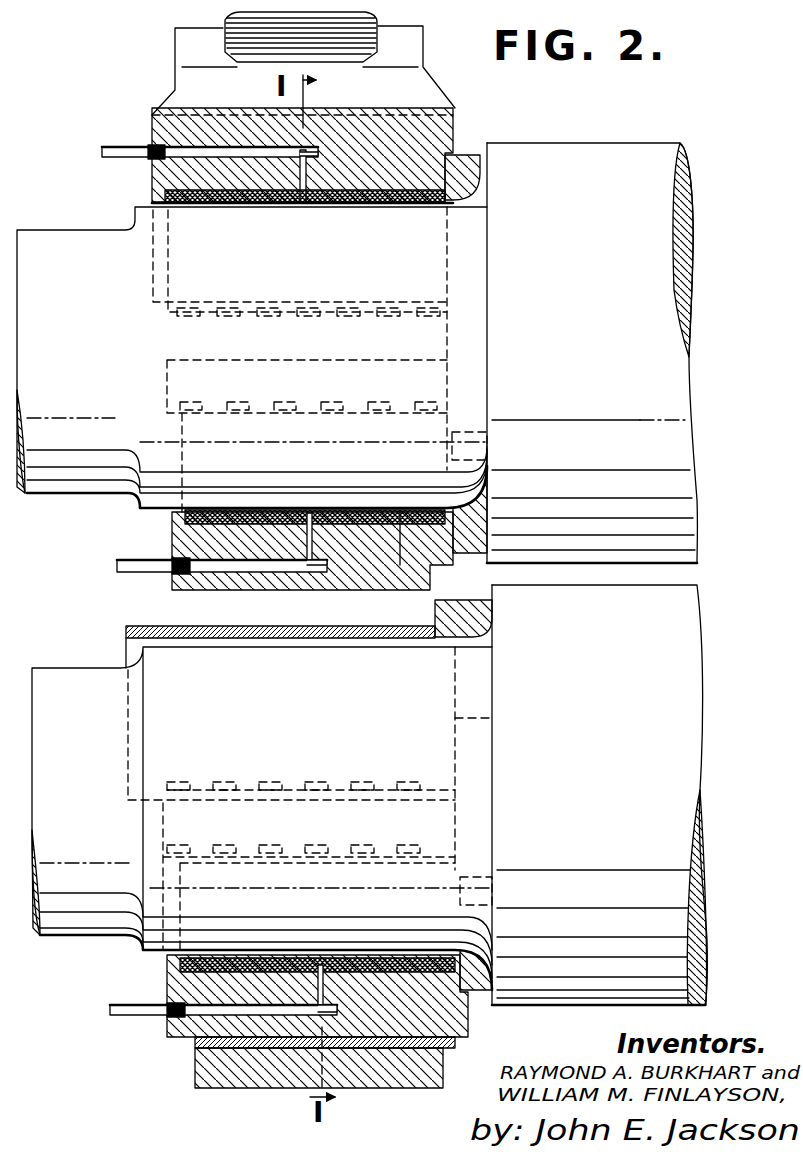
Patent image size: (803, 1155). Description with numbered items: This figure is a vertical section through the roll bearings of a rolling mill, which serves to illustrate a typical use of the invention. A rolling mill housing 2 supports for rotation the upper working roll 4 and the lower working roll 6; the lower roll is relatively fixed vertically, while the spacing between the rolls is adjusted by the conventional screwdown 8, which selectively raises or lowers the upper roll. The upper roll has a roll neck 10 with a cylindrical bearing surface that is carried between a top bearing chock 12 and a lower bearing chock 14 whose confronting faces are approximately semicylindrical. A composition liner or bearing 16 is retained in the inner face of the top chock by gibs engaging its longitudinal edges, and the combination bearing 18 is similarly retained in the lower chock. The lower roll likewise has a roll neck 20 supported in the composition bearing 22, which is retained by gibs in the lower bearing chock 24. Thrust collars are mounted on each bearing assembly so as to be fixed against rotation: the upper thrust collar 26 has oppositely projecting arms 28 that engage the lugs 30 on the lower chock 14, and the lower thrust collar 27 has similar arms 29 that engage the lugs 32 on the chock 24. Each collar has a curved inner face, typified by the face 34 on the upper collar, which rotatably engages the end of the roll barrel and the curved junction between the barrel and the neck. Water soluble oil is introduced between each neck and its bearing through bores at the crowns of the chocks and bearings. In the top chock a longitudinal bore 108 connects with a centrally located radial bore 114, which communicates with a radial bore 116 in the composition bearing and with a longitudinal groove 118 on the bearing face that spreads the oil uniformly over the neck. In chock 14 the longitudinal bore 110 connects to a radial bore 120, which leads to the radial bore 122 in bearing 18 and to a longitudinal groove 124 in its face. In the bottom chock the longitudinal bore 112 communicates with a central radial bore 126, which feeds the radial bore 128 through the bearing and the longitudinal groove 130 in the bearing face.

The rolling mill housing 2 is at (183, 43).
The upper working roll 4 is at (628, 330).
The lower working roll 6 is at (630, 770).
The screwdown 8 is at (380, 33).
The roll neck 10 is at (170, 347).
The top bearing chock 12 is at (165, 128).
The lower bearing chock 14 is at (187, 576).
The composition liner or bearing 16 is at (226, 203).
The combination bearing 18 is at (182, 522).
The roll neck 20 is at (320, 758).
The composition bearing 22 is at (175, 962).
The lower bearing chock 24 is at (205, 1018).
The upper thrust collar 26 is at (458, 160).
The lower thrust collar 27 is at (478, 608).
The arms 28 is at (447, 310).
The arms 29 is at (478, 760).
The lugs 30 is at (470, 448).
The lugs 32 is at (480, 888).
The curved inner face 34 is at (474, 172).
The longitudinal bore 108 is at (180, 155).
The longitudinal bore 110 is at (217, 573).
The longitudinal bore 112 is at (235, 1046).
The radial bore 114 is at (310, 163).
The radial bore 116 is at (305, 203).
The longitudinal groove 118 is at (258, 204).
The radial bore 120 is at (302, 548).
The radial bore 122 is at (322, 553).
The longitudinal groove 124 is at (402, 545).
The radial bore 126 is at (322, 1000).
The radial bore 128 is at (348, 1005).
The longitudinal groove 130 is at (290, 958).